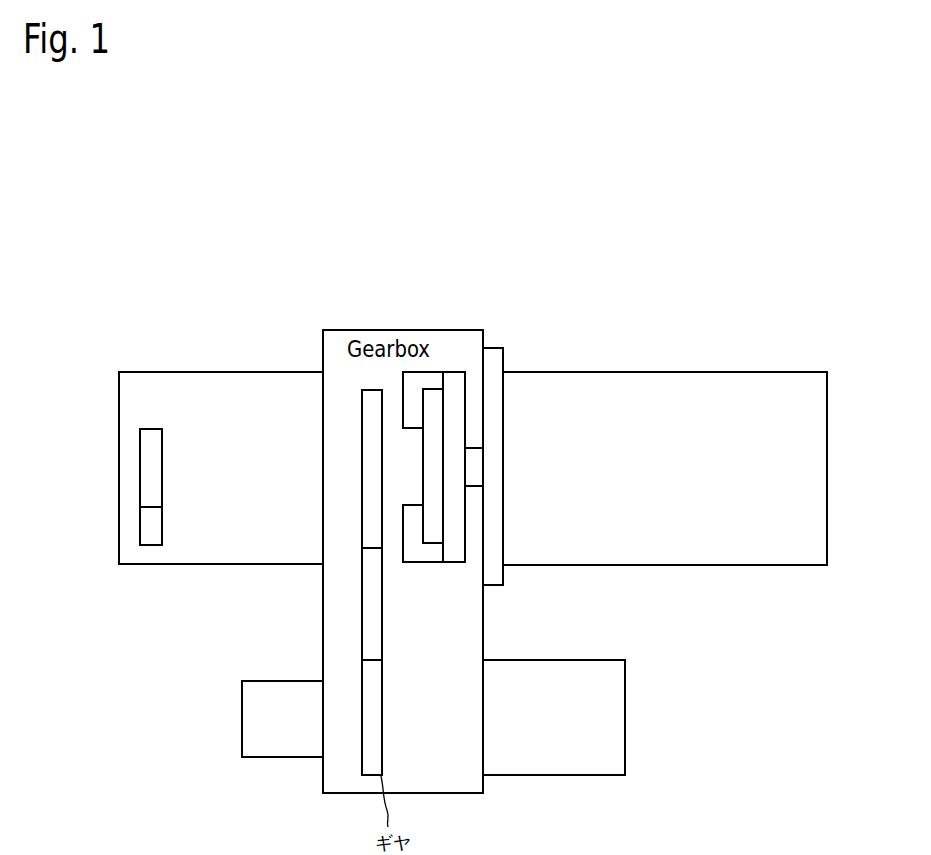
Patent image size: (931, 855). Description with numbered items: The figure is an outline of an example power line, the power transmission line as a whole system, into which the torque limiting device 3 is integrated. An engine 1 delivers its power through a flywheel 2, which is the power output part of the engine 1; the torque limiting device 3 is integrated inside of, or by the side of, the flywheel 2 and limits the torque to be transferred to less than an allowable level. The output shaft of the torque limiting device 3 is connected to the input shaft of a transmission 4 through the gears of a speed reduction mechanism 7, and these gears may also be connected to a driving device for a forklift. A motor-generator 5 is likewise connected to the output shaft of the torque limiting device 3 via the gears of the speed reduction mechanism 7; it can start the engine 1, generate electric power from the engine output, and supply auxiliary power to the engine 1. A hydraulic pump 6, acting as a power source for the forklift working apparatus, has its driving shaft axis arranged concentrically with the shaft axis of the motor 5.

The engine 1 is at (708, 372).
The flywheel 2 is at (466, 385).
The torque limiting device 3 is at (445, 373).
The transmission 4 is at (158, 372).
The motor (motor-generator) 5 is at (552, 660).
The hydraulic pump 6 is at (242, 728).
The speed reduction mechanism 7 is at (362, 613).